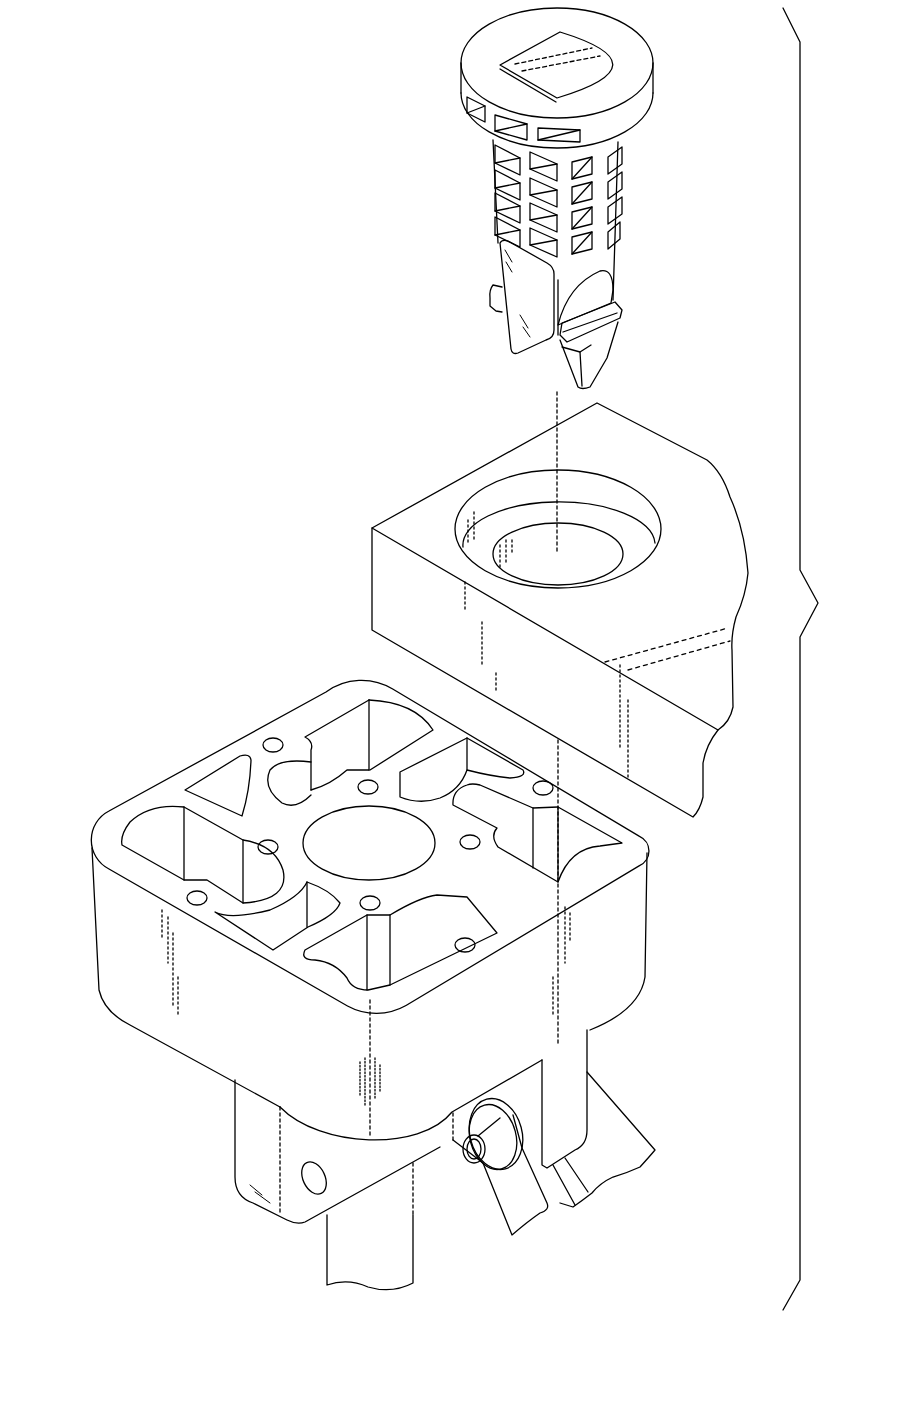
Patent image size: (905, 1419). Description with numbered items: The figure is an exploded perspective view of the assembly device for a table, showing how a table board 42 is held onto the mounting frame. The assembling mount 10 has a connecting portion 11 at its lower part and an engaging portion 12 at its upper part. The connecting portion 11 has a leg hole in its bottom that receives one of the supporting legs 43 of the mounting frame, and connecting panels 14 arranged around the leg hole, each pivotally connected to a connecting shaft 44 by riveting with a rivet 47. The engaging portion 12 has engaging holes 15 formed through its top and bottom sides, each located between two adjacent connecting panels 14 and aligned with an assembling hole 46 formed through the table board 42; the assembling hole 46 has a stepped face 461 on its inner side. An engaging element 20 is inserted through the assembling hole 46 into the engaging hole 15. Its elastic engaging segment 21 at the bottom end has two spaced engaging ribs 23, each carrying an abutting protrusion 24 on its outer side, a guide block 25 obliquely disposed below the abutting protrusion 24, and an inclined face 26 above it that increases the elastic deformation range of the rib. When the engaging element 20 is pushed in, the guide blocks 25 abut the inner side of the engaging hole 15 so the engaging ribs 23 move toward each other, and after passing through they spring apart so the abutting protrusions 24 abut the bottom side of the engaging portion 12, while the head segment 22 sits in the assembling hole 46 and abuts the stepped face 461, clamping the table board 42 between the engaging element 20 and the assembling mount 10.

The assembling mount 10 is at (168, 700).
The connecting portion 11 is at (186, 1121).
The engaging portion 12 is at (138, 773).
The connecting panel 14 is at (247, 1160).
The engaging hole 15 is at (333, 727).
The engaging element 20 is at (700, 127).
The elastic engaging segment 21 is at (460, 180).
The head segment 22 is at (487, 47).
The engaging rib 23 is at (465, 272).
The abutting protrusion 24 is at (492, 292).
The guide block 25 is at (600, 378).
The inclined face 26 is at (600, 287).
The table board 42 is at (352, 560).
The supporting leg 43 is at (343, 1261).
The connecting shaft 44 is at (515, 1193).
The assembling hole 46 is at (440, 512).
The stepped face 461 is at (632, 542).
The rivet 47 is at (493, 1140).